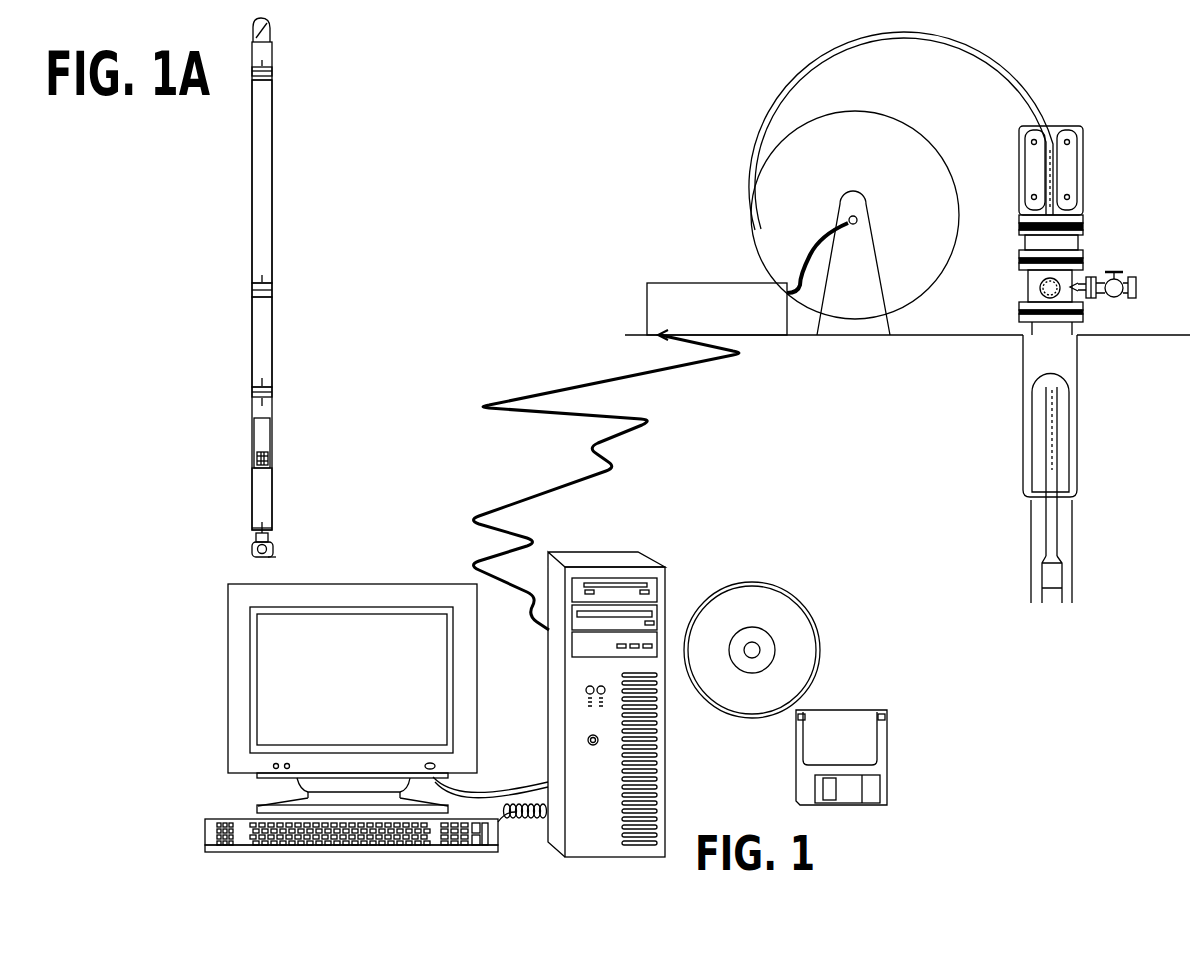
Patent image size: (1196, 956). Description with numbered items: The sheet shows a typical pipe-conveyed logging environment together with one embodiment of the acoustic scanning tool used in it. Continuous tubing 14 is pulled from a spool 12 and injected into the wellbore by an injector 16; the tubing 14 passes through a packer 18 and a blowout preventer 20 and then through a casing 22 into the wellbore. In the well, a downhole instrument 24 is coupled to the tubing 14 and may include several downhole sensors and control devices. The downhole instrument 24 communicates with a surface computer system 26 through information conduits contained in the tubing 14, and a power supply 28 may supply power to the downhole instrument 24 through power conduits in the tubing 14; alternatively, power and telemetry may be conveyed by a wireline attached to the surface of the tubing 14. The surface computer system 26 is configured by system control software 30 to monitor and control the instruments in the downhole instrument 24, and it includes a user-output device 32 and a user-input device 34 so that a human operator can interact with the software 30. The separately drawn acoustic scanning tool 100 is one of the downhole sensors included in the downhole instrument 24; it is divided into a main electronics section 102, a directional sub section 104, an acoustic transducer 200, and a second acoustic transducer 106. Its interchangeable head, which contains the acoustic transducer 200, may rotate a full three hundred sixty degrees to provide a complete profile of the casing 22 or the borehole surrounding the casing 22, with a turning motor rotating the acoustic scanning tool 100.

In FIG. 1, the spool 12 is at (852, 182).
In FIG. 1, the continuous tubing 14 is at (792, 91).
In FIG. 1, the injector 16 is at (1079, 156).
In FIG. 1, the packer 18 is at (1079, 240).
In FIG. 1, the blowout preventer 20 is at (1027, 288).
In FIG. 1, the casing 22 is at (1074, 377).
In FIG. 1, the downhole instrument 24 is at (1063, 573).
In FIG. 1, the surface computer system 26 is at (546, 736).
In FIG. 1, the power supply 28 is at (692, 281).
In FIG. 1, the system control software 30 is at (795, 732).
In FIG. 1, the user-output device 32 is at (246, 776).
In FIG. 1, the user-input device 34 is at (240, 856).
In FIG. 1A, the acoustic scanning tool 100 is at (243, 101).
In FIG. 1A, the main electronics section 102 is at (252, 172).
In FIG. 1A, the directional sub section 104 is at (252, 338).
In FIG. 1A, the second acoustic transducer 106 is at (252, 480).
In FIG. 1A, the acoustic transducer 200 is at (265, 430).